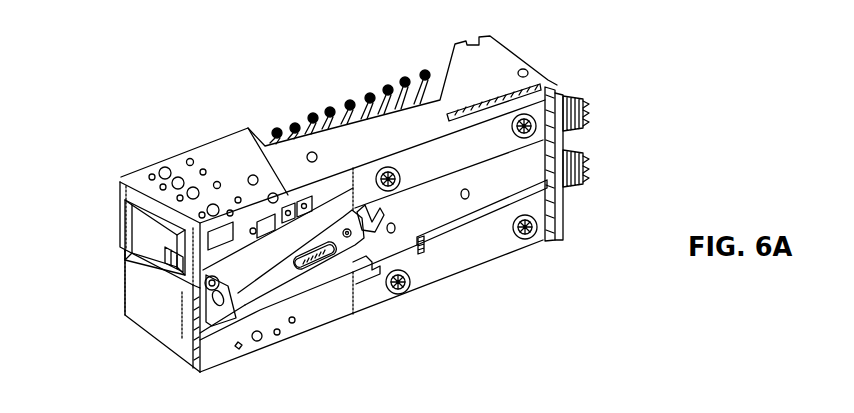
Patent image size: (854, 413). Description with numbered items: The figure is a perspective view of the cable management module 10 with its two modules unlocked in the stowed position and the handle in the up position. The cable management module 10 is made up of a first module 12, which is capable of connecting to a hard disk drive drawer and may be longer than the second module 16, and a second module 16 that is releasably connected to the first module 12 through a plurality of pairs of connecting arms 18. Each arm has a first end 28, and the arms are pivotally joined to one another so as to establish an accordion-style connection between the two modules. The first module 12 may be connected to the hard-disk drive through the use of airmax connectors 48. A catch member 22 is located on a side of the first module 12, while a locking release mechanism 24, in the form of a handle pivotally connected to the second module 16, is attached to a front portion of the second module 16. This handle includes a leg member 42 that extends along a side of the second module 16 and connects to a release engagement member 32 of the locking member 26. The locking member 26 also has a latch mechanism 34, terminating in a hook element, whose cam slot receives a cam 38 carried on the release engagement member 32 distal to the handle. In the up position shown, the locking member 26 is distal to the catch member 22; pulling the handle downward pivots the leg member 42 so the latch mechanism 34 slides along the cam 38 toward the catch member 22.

The cable management module 10 is at (670, 12).
The first module 12 is at (567, 240).
The second module 16 is at (150, 292).
The pairs of connecting arms 18 is at (360, 100).
The catch member 22 is at (446, 290).
The locking release mechanism 24 is at (118, 187).
The locking member 26 is at (283, 362).
The first end 28 is at (410, 70).
The release engagement member 32 is at (227, 377).
The latch mechanism 34 is at (412, 315).
The cam 38 is at (327, 350).
The leg member 42 is at (147, 360).
The airmax connectors 48 is at (612, 165).